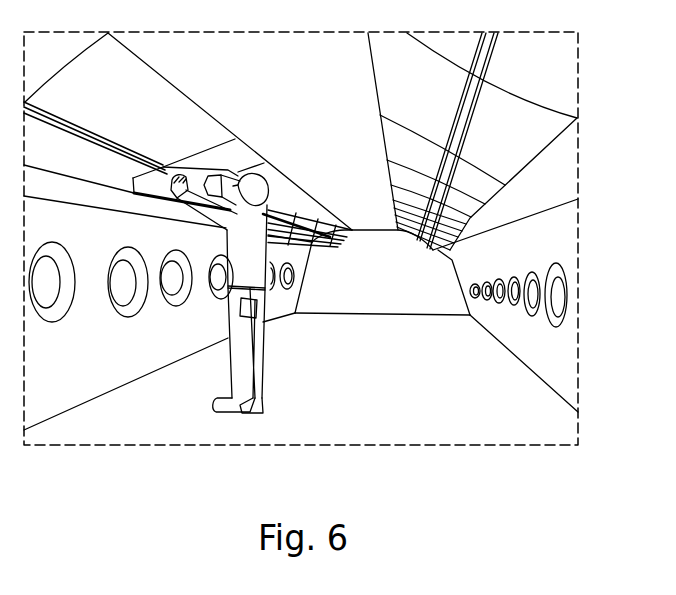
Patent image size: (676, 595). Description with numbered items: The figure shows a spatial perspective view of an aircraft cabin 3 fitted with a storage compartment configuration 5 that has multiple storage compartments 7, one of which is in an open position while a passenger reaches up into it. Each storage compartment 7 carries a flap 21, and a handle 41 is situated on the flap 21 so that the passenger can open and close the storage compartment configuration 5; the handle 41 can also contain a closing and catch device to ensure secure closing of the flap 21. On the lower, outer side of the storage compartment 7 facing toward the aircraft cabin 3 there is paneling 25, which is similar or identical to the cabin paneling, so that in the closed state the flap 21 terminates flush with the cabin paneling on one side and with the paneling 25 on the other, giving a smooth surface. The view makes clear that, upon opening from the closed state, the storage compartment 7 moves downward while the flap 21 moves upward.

The aircraft cabin 3 is at (552, 156).
The storage compartment configuration 5 is at (233, 110).
The flap 21 is at (153, 88).
The handle 41 is at (120, 146).
The storage compartment 7 is at (150, 198).
The paneling 25 is at (172, 204).